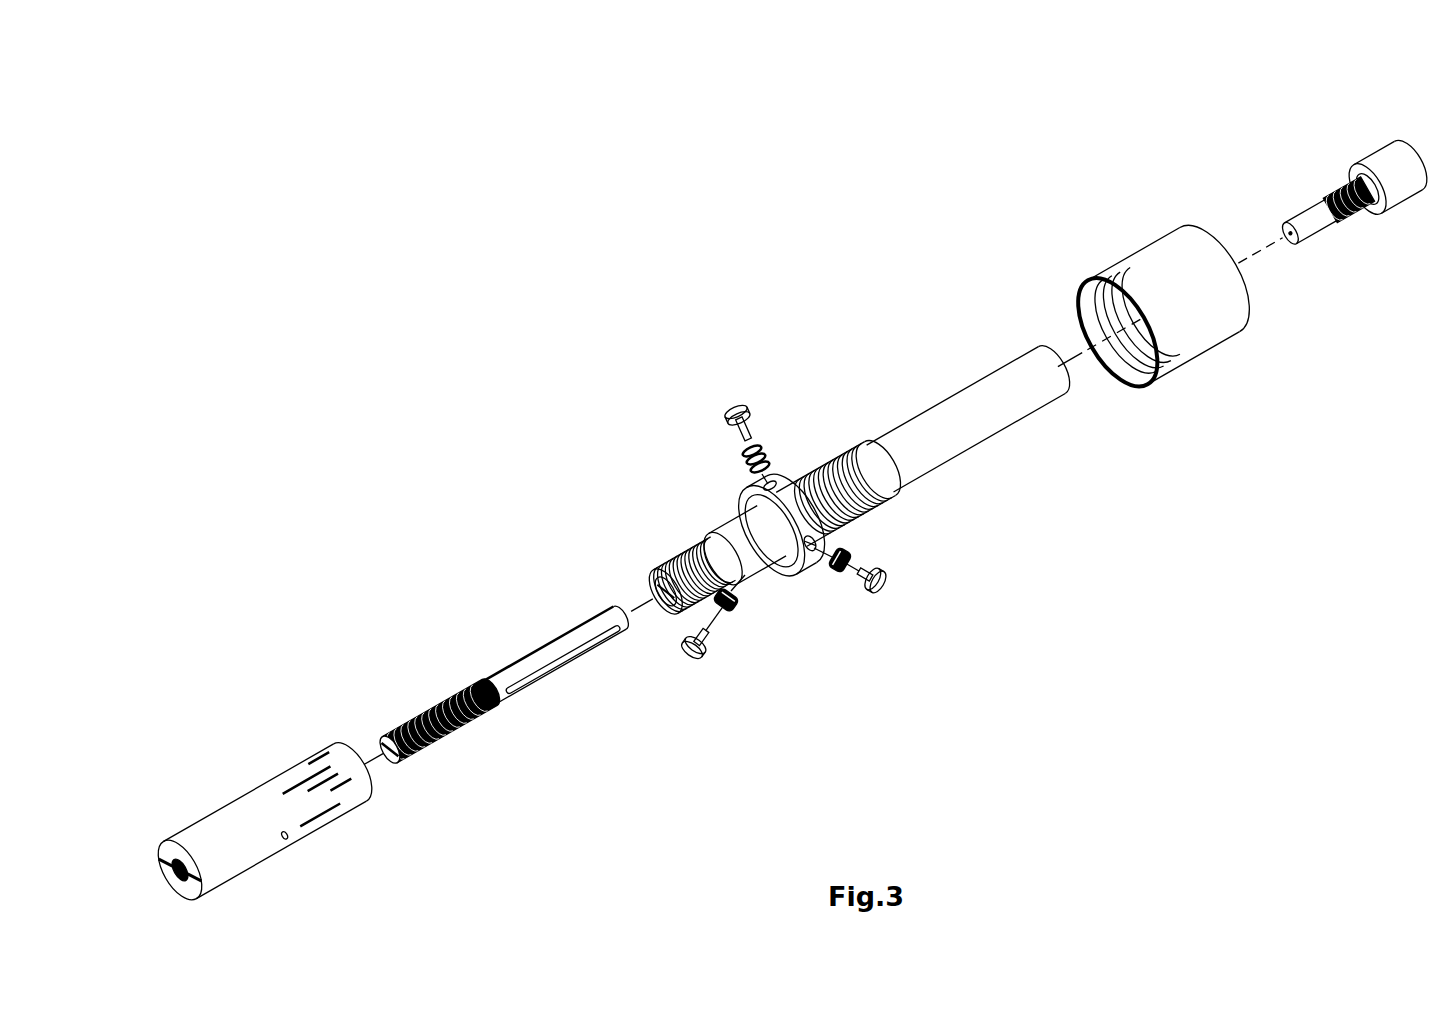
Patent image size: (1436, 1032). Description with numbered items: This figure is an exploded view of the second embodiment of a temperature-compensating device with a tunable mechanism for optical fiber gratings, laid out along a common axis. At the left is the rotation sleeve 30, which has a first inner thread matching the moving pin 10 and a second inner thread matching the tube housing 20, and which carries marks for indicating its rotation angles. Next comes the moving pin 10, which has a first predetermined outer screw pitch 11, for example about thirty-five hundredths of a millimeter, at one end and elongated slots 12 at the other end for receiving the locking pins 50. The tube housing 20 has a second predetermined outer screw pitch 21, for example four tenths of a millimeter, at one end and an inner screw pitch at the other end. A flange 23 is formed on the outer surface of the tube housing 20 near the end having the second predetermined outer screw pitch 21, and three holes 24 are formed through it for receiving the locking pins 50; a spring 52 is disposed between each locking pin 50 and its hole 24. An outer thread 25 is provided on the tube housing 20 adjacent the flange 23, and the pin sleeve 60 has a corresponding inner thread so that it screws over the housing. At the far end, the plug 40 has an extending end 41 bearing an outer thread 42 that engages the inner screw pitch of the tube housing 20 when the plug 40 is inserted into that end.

The moving pin 10 is at (490, 663).
The first predetermined outer screw pitch 11 is at (420, 713).
The elongated slots 12 is at (584, 650).
The tube housing 20 is at (825, 465).
The second predetermined outer screw pitch 21 is at (655, 565).
The flange 23 is at (782, 478).
The holes 24 is at (815, 545).
The outer thread 25 is at (826, 463).
The rotation sleeve 30 is at (224, 813).
The plug 40 is at (1313, 157).
The extending end 41 is at (1300, 215).
The outer thread 42 is at (1332, 197).
The locking pin 50 is at (884, 588).
The spring 52 is at (855, 559).
The pin sleeve 60 is at (1145, 262).